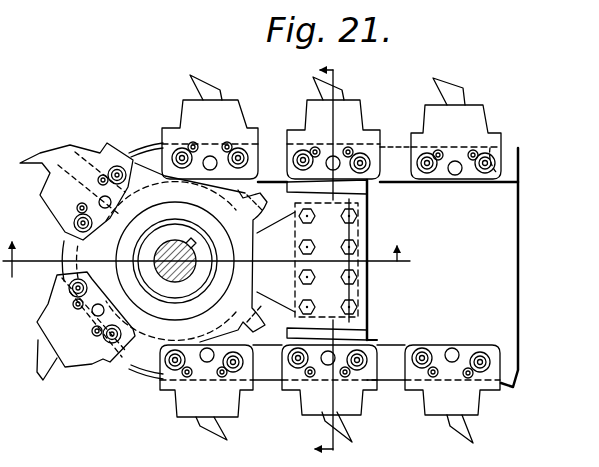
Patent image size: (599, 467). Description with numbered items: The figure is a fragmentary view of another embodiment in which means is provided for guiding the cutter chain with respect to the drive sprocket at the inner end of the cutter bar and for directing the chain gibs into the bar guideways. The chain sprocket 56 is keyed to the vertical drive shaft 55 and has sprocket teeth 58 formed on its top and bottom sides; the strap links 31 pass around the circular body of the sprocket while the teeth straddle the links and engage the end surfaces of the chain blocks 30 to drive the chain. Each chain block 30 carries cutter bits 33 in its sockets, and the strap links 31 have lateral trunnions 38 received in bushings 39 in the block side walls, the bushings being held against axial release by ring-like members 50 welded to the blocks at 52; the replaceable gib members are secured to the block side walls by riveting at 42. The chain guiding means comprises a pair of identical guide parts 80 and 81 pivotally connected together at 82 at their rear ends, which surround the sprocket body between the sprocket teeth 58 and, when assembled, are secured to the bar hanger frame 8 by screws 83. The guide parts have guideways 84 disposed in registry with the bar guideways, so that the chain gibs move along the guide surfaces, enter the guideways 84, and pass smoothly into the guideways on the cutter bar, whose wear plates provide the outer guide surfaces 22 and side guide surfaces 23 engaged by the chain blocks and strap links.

The bar hanger frame 8 is at (508, 220).
The outer guide surfaces 22 is at (350, 262).
The side guide surfaces 23 is at (207, 247).
The chain blocks 30 is at (474, 402).
The strap links 31 is at (520, 181).
The cutter bits 33 is at (458, 79).
The lateral trunnions 38 is at (500, 156).
The bushings 39 is at (500, 150).
The riveted securing point 42 is at (454, 352).
The washer or ring-like members 50 is at (474, 153).
The weld 52 is at (482, 161).
The vertical drive shaft 55 is at (193, 259).
The chain sprocket 56 is at (148, 320).
The sprocket teeth 58 is at (253, 302).
The guide part 80 is at (268, 165).
The guide part 81 is at (361, 315).
The pivotal connection 82 is at (57, 270).
The screws 83 is at (358, 305).
The guideways 84 is at (374, 133).